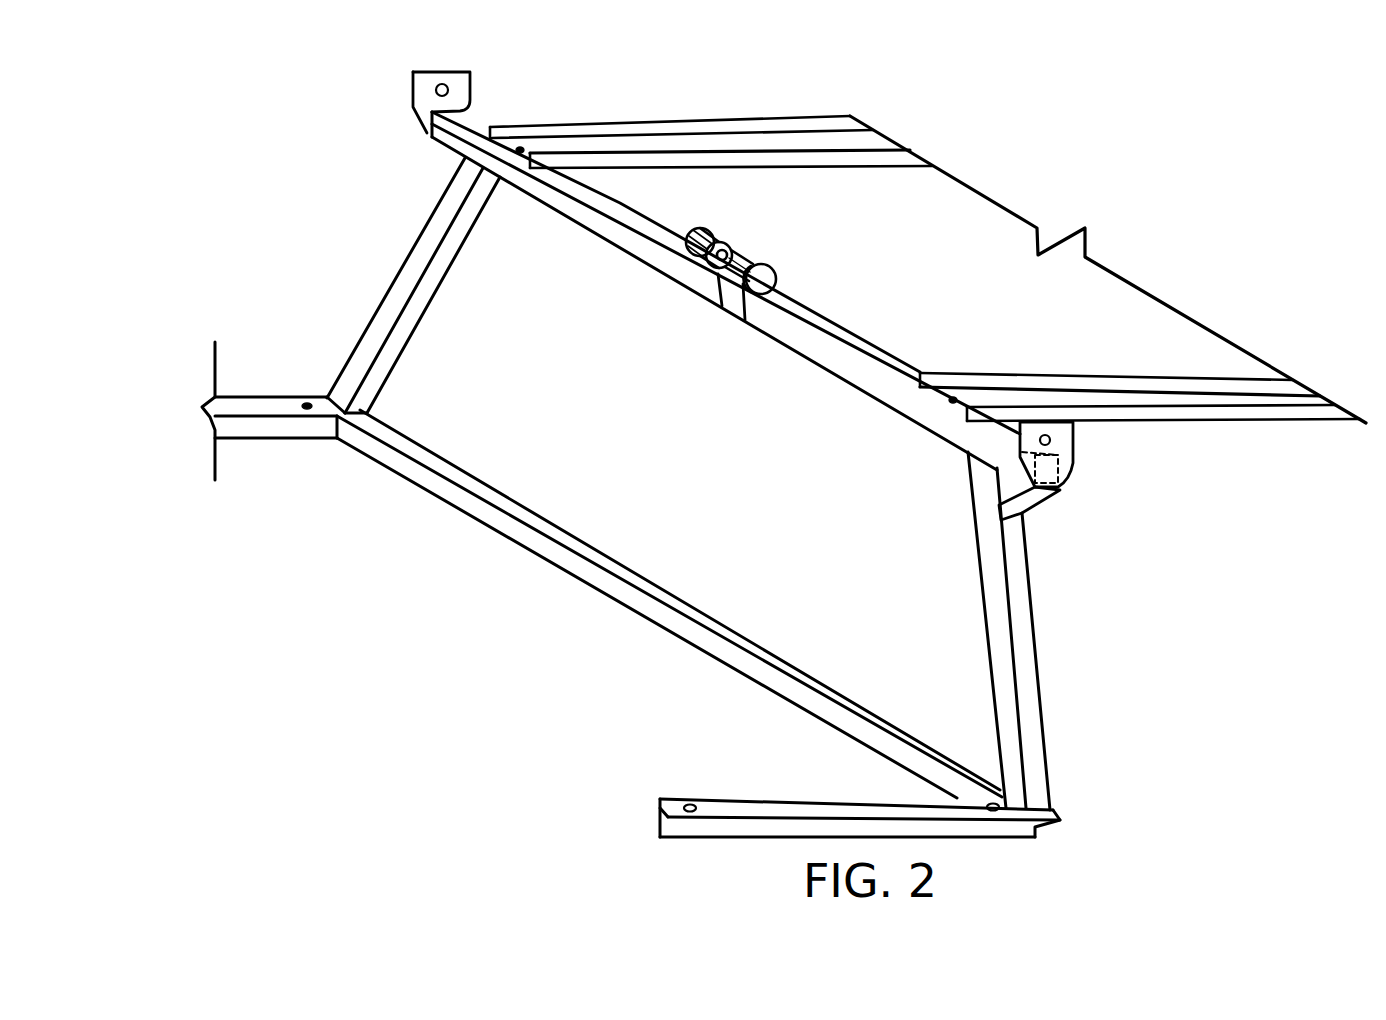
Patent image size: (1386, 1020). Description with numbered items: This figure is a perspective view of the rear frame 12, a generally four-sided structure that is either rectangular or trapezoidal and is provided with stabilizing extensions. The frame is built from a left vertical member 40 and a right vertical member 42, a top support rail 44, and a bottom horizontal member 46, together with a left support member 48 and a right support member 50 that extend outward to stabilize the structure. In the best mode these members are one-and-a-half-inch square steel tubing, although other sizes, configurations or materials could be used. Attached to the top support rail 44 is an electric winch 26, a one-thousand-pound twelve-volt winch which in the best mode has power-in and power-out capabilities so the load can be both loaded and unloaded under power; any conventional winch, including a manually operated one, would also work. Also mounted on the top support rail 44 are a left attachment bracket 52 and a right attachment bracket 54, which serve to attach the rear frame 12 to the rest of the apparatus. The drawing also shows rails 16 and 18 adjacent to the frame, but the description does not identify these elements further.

The rear frame 12 is at (1211, 607).
The lower side rail 16 is at (1263, 412).
The upper side rail 18 is at (713, 126).
The electric winch 26 is at (776, 264).
The left vertical member 40 is at (400, 286).
The right vertical member 42 is at (1030, 624).
The top support rail 44 is at (677, 276).
The bottom horizontal member 46 is at (575, 542).
The left support member 48 is at (263, 408).
The right support member 50 is at (786, 798).
The left attachment bracket 52 is at (420, 88).
The right attachment bracket 54 is at (1075, 443).